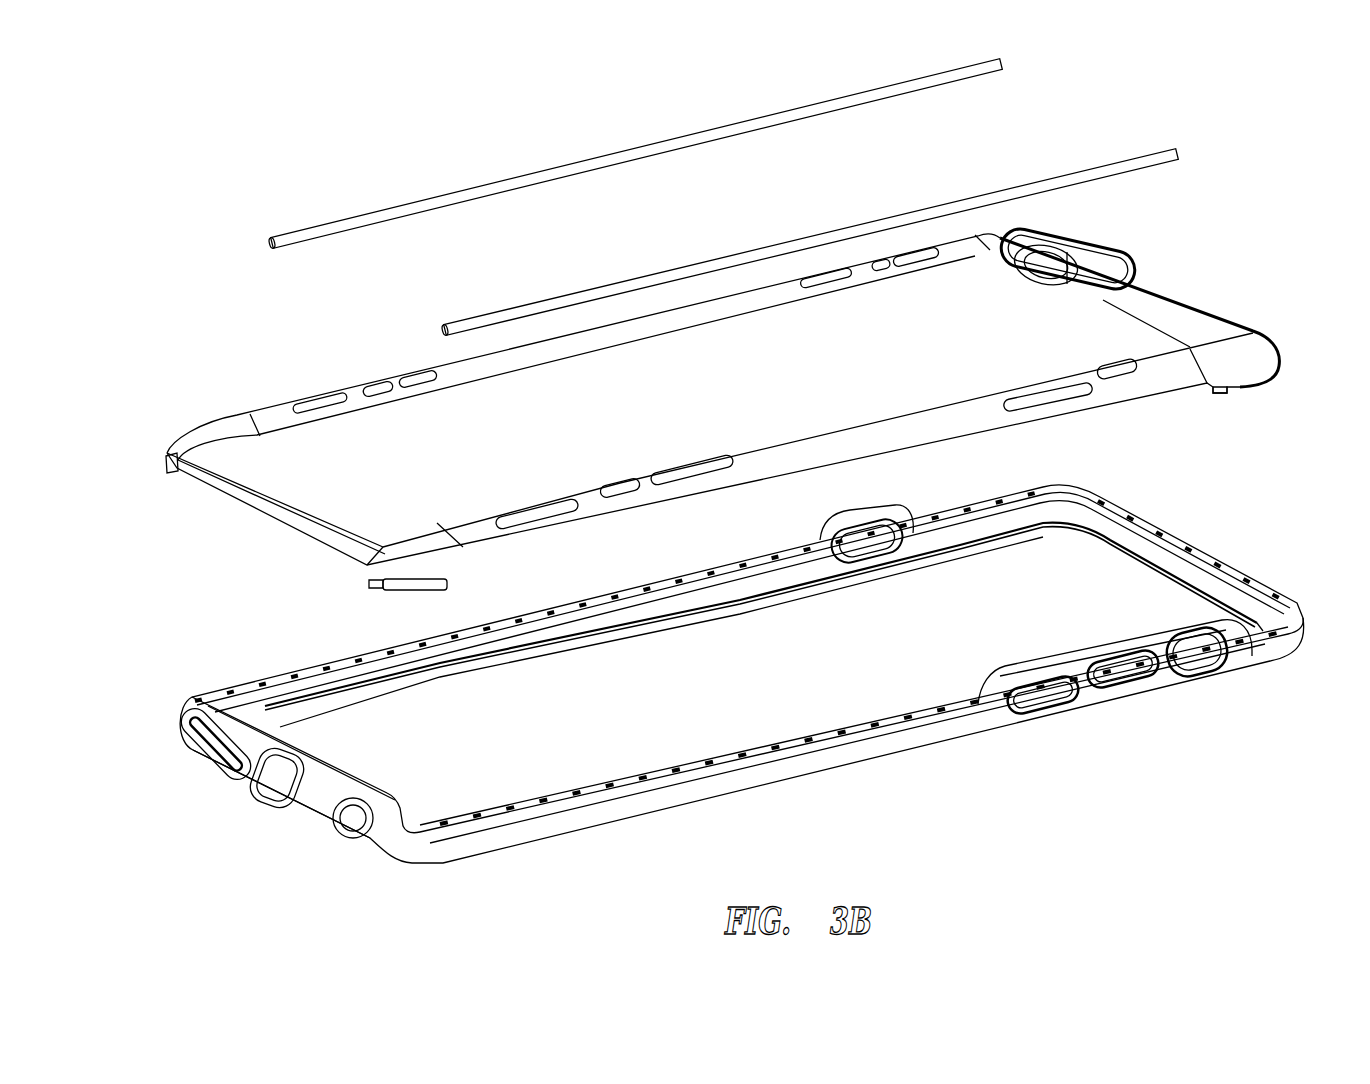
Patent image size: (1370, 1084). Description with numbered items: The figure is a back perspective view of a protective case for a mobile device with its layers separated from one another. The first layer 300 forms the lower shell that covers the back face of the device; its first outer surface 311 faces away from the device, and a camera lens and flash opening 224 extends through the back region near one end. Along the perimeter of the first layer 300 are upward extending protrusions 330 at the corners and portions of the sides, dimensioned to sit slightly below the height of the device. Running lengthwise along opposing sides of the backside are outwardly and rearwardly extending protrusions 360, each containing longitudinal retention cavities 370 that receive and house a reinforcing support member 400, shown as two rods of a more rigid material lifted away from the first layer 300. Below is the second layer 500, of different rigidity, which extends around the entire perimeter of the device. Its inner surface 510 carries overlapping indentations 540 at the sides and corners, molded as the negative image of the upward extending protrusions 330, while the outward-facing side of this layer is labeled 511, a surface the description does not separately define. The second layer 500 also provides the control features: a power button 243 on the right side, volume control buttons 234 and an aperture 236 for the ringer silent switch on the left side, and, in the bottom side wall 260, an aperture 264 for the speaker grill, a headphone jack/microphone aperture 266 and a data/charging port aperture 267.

The reinforcing support member 400 is at (1130, 158).
The first layer 300 is at (700, 402).
The first outer surface 311 is at (300, 478).
The outwardly extending protrusion 360 is at (778, 297).
The retention cavity 370 is at (410, 372).
The upward extending protrusion 330 is at (1262, 367).
The camera lens and flash opening 224 is at (1098, 270).
The second layer 500 is at (740, 775).
The inner surface 510 is at (982, 525).
The outer side surface 511 is at (915, 733).
The overlapping indentation 540 is at (1195, 568).
The power button 243 is at (882, 556).
The volume control buttons 234 is at (1047, 695).
The ringer silent switch aperture 236 is at (1200, 670).
The speaker grill aperture 264 is at (233, 745).
The data/charging port aperture 267 is at (290, 781).
The bottom side wall 260 is at (318, 807).
The headphone jack/microphone aperture 266 is at (346, 840).